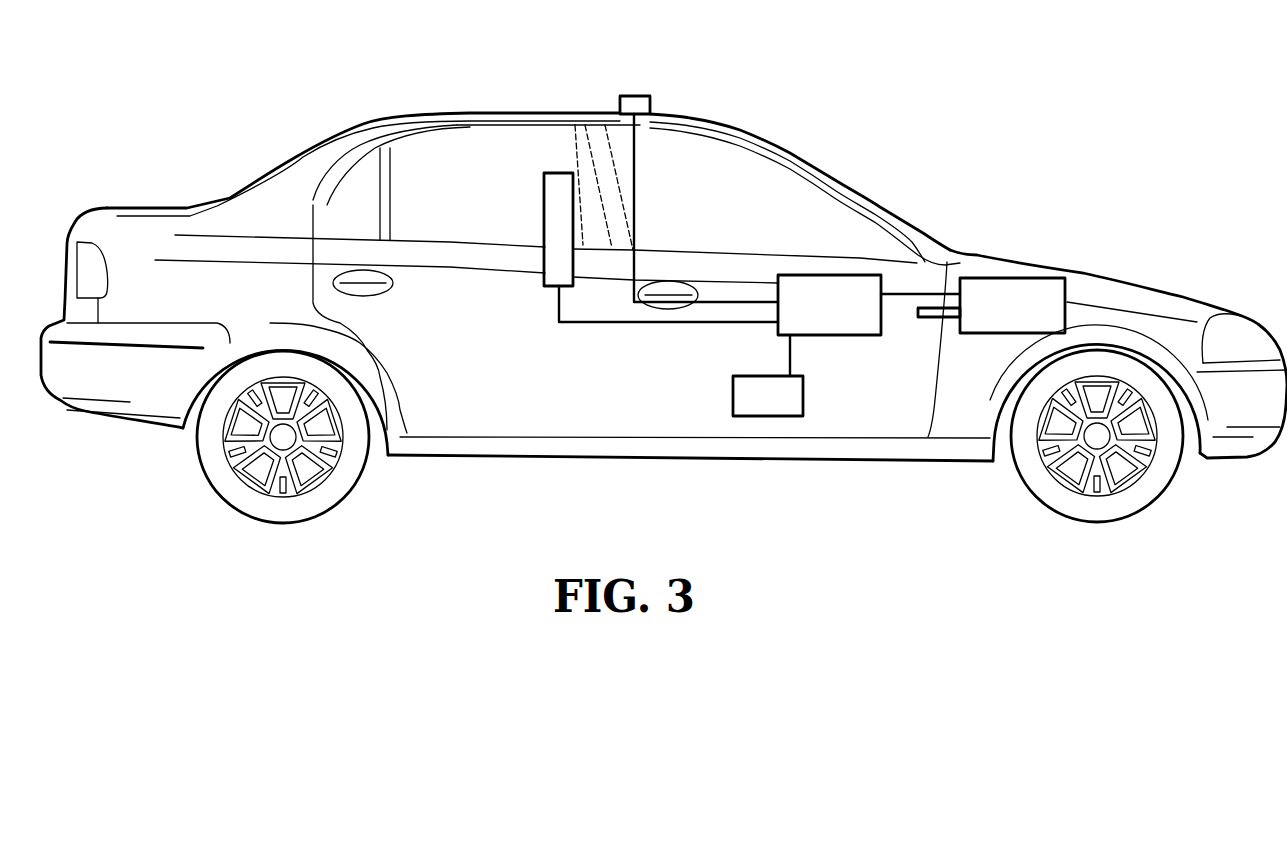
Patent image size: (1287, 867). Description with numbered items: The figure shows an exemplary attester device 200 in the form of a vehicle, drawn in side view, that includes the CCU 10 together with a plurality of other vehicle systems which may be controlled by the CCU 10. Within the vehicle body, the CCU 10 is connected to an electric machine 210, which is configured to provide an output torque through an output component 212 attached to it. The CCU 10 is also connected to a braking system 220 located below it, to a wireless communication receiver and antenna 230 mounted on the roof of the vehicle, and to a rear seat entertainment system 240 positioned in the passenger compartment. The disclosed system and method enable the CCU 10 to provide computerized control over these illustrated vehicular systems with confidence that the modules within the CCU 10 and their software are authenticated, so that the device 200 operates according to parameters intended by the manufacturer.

The attester device 200 is at (508, 113).
The CCU 10 is at (828, 275).
The electric machine 210 is at (1013, 278).
The output component 212 is at (937, 318).
The braking system 220 is at (770, 416).
The wireless communication receiver and antenna 230 is at (634, 96).
The rear seat entertainment system 240 is at (544, 215).